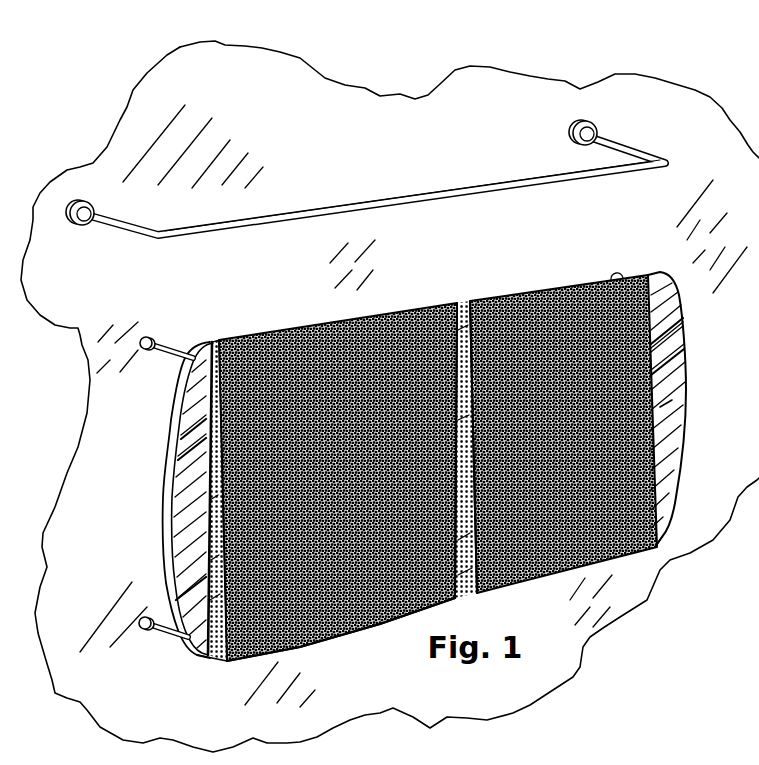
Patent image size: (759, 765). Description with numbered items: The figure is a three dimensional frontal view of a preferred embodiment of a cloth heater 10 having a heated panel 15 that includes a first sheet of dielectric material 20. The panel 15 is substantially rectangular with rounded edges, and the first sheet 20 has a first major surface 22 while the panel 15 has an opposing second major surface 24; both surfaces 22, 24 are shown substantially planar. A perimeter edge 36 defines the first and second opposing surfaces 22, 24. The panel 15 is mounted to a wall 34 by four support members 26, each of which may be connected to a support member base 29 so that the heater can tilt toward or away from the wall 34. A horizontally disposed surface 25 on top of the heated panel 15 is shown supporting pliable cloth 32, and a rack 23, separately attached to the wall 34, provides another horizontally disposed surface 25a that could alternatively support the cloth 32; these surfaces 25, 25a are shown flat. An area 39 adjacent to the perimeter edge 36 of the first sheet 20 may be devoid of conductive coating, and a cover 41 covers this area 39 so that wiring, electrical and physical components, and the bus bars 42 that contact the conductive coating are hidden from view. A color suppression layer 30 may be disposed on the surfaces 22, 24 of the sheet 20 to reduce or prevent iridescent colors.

The cloth heater 10 is at (278, 108).
The heated panel 15 is at (534, 243).
The first sheet of dielectric material 20 is at (207, 398).
The first major surface 22 is at (213, 427).
The rack 23 is at (651, 149).
The second major surface 24 is at (182, 480).
The horizontally disposed surface 25 is at (460, 300).
The horizontally disposed surface of rack 25a is at (457, 189).
The support member 26 is at (183, 328).
The support member base 29 is at (152, 337).
The color suppression layer 30 is at (213, 577).
The pliable cloth 32 is at (323, 637).
The wall 34 is at (107, 333).
The perimeter edge 36 is at (163, 532).
The area adjacent to the perimeter edge 39 is at (663, 328).
The cover 41 is at (207, 657).
The bus bar 42 is at (180, 643).